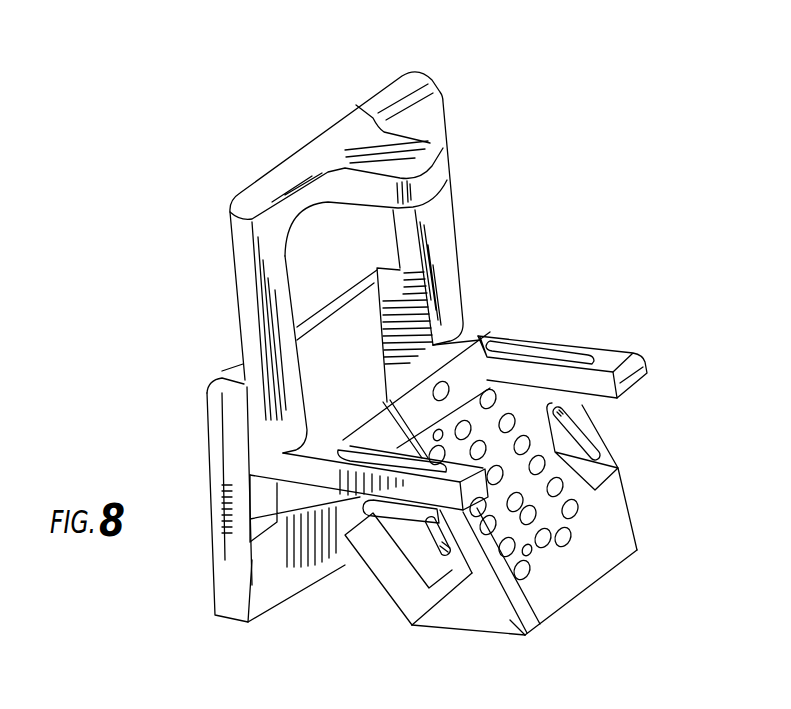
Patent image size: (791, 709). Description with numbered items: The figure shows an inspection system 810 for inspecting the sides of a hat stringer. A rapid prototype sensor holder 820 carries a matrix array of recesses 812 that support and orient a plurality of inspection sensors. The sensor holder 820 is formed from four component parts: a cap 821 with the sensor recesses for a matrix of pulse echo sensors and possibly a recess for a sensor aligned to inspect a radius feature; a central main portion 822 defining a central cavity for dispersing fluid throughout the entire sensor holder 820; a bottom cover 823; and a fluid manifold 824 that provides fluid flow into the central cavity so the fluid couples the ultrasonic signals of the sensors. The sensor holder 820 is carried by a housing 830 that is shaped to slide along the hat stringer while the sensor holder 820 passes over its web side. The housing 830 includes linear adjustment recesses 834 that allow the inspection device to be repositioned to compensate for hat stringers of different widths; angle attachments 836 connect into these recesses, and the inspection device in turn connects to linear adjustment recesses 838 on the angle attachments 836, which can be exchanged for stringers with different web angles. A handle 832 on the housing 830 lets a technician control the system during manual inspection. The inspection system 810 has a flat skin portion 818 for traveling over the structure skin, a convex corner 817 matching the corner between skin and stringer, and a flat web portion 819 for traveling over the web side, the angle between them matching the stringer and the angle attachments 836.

The inspection system 810 is at (542, 158).
The matrix array of recesses 812 is at (560, 452).
The convex corner 817 is at (477, 636).
The skin portion 818 is at (494, 643).
The web portion 819 is at (390, 604).
The sensor holder 820 is at (590, 573).
The cap 821 is at (563, 587).
The central main portion 822 is at (522, 633).
The bottom cover 823 is at (398, 578).
The fluid manifold 824 is at (470, 368).
The housing 830 is at (427, 62).
The handle 832 is at (250, 231).
The linear adjustment recesses 834 is at (373, 453).
The angle attachments 836 is at (428, 543).
The linear adjustment recesses 838 is at (437, 536).